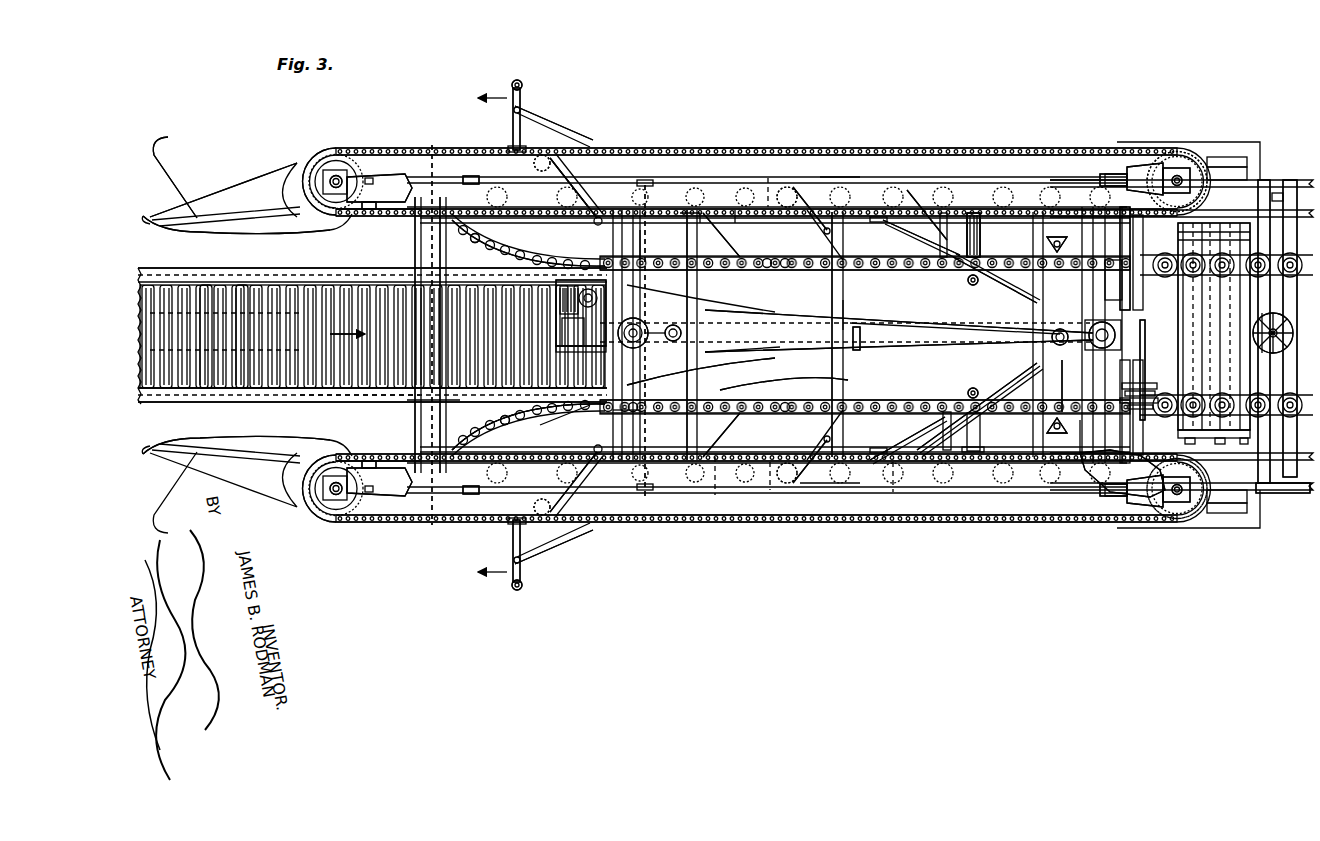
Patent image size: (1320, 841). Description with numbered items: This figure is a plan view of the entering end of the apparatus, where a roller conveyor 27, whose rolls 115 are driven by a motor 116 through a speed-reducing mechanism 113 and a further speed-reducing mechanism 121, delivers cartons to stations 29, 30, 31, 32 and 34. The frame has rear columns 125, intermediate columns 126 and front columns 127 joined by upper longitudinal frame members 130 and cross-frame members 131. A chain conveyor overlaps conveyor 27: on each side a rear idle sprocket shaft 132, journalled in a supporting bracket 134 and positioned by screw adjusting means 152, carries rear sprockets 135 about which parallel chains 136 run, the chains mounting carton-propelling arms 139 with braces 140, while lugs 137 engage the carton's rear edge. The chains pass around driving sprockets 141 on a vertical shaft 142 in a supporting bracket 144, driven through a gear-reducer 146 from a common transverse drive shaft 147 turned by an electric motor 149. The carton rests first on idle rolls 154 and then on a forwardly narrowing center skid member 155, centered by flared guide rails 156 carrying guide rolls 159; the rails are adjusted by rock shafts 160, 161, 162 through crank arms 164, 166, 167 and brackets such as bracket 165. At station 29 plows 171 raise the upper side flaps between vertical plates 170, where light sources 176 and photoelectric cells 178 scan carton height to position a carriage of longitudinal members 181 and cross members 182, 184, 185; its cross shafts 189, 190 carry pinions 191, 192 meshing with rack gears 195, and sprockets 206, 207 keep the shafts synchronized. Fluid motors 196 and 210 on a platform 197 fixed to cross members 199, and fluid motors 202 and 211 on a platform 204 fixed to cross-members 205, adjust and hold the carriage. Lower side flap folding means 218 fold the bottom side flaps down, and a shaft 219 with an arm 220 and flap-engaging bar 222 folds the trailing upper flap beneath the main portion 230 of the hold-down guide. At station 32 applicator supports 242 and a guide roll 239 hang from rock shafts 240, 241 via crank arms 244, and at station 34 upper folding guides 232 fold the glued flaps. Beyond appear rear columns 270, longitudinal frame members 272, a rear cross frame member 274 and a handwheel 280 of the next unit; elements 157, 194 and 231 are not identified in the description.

The roller conveyor 27 is at (153, 266).
The flap-erecting station 29 is at (243, 176).
The height-sensing station 30 is at (365, 178).
The upper end flap folding station 31 is at (550, 280).
The gluing station 32 is at (730, 142).
The side flap-folding station 34 is at (978, 208).
The speed-reducing mechanism 113 is at (208, 292).
The rolls 115 is at (243, 388).
The motor 116 is at (265, 292).
The further speed-reducing mechanism 121 is at (165, 390).
The rear columns 125 is at (441, 341).
The intermediate columns 126 is at (643, 185).
The front columns 127 is at (1105, 172).
The upper longitudinal frame member 130 is at (845, 177).
The cross-frame members 131 is at (440, 248).
The rear vertical idle sprocket shaft 132 is at (330, 180).
The supporting bracket 134 is at (400, 497).
The rear sprockets 135 is at (345, 150).
The parallel chains 136 is at (768, 178).
The opposed lugs 137 is at (514, 80).
The carton-propelling arms 139 is at (513, 88).
The braces 140 is at (572, 132).
The driving sprockets 141 is at (1181, 178).
The vertical shaft 142 is at (1178, 168).
The forwardly extending supporting bracket 144 is at (1125, 174).
The gear-reducer 146 is at (1160, 152).
The common transverse drive shaft 147 is at (1147, 330).
The electric motor 149 is at (1215, 335).
The screw type adjusting means 152 is at (465, 177).
The idle rolls 154 is at (490, 395).
The center skid member 155 is at (855, 316).
The side guiding rails 156 is at (787, 256).
The curved roller track 157 is at (485, 238).
The guide rolls 159 is at (480, 256).
The rear vertical rock shaft 160 is at (542, 158).
The intermediate vertical rock shaft 161 is at (907, 190).
The forward vertical rock shaft 162 is at (977, 213).
The crank arm 164 is at (575, 158).
The bracket 165 is at (630, 415).
The crank arm 166 is at (920, 217).
The crank arm 167 is at (1047, 242).
The vertical plates 170 is at (348, 218).
The plow 171 is at (197, 225).
The light sources 176 is at (383, 460).
The photoelectric cell 178 is at (370, 210).
The longitudinal members 181 is at (843, 235).
The rear cross members 182 is at (595, 430).
The intermediate cross-member 184 is at (847, 381).
The forward cross-member 185 is at (1110, 472).
The rear cross shaft 189 is at (645, 245).
The forward cross-shaft 190 is at (1120, 230).
The pinions 191 is at (655, 182).
The pinions 192 is at (1095, 175).
The arm 194 is at (638, 373).
The stationary vertical rack gears 195 is at (655, 178).
The vertical fluid motor 196 is at (633, 318).
The horizontal platform 197 is at (673, 325).
The cross members 199 is at (640, 404).
The fluid motor 202 is at (1065, 345).
The horizontal platform 204 is at (1088, 338).
The frame cross-members 205 is at (1000, 285).
The sprocket 206 is at (685, 210).
The sprocket 207 is at (1098, 180).
The fluid motor 210 is at (682, 330).
The fluid motor 211 is at (1050, 337).
The lower side flap folding means 218 is at (178, 185).
The horizontal shaft 219 is at (1293, 335).
The arm 220 is at (418, 400).
The cross flap-engaging bar 222 is at (352, 395).
The main portion of hold-down guide 230 is at (868, 326).
The block 231 is at (857, 350).
The upper side flap-folding guides 232 is at (1022, 375).
The guide roll 239 is at (582, 415).
The rock shaft 240 is at (735, 210).
The rock shaft 241 is at (795, 195).
The upper glue applicator supports 242 is at (742, 350).
The crank arms 244 is at (825, 205).
The rear columns 270 is at (1264, 180).
The upper horizontal longitudinal frame members 272 is at (1290, 180).
The rear horizontal cross frame member 274 is at (1270, 493).
The handwheel 280 is at (1263, 350).